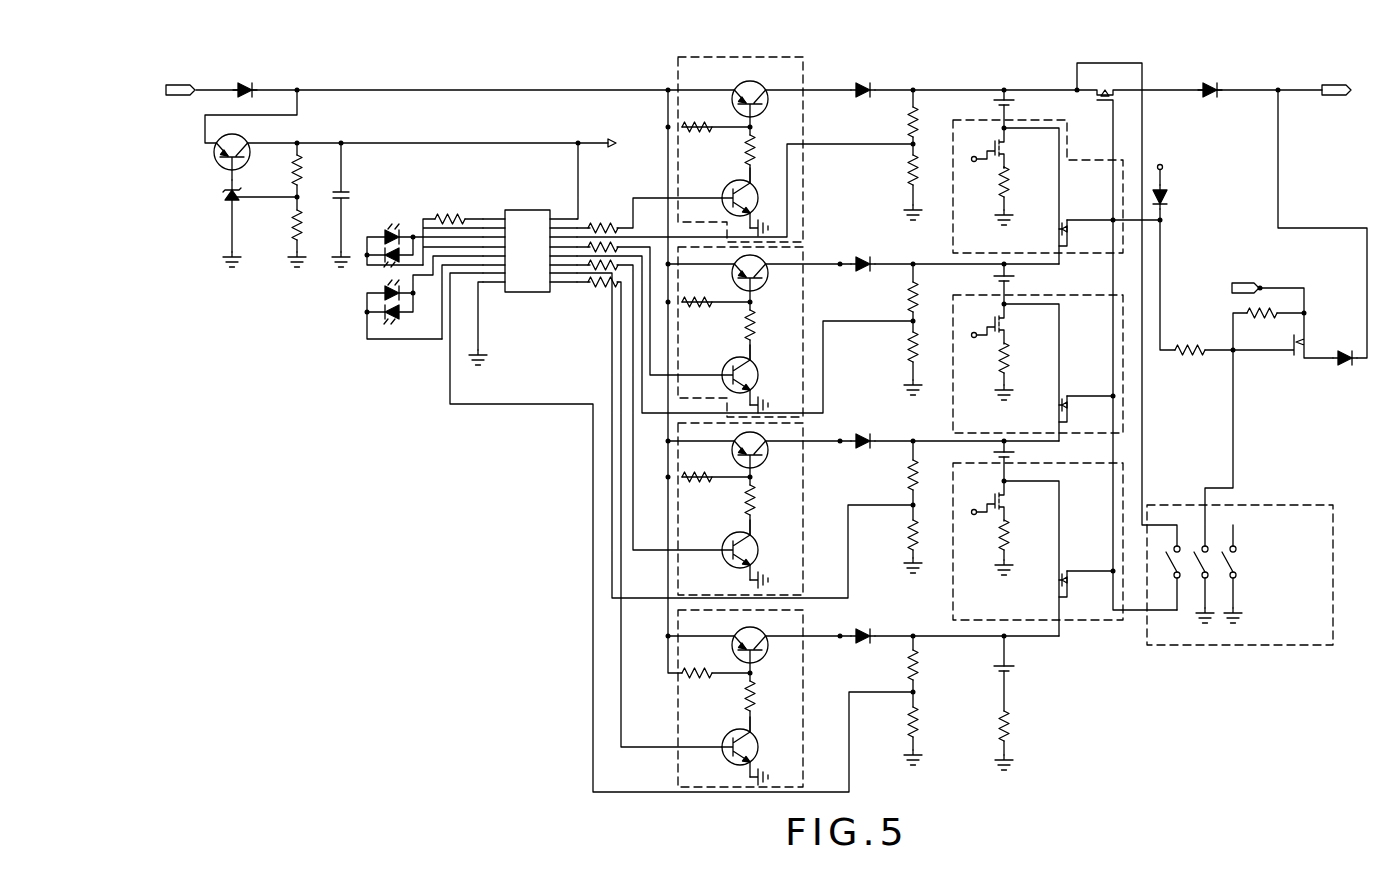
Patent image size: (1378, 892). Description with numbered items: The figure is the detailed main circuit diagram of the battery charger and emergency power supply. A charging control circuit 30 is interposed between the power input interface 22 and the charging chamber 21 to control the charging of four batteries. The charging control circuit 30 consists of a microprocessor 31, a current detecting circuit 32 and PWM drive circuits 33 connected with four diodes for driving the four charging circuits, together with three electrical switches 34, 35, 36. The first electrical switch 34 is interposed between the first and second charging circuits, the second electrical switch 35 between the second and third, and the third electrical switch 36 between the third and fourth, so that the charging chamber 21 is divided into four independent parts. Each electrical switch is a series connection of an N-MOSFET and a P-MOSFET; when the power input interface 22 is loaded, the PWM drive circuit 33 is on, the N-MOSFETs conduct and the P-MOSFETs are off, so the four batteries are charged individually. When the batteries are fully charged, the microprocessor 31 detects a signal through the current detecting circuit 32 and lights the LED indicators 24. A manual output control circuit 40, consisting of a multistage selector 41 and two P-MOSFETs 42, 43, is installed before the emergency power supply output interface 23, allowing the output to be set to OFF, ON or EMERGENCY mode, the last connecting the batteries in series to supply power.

The charging chamber 21 is at (1001, 87).
The power input interface 22 is at (183, 97).
The emergency power supply output interface 23 is at (1330, 97).
The LED indicators 24 is at (353, 320).
The charging control circuit 30 is at (1062, 48).
The microprocessor 31 is at (527, 294).
The current detecting circuit 32 is at (592, 454).
The PWM drive circuit 33 is at (790, 198).
The first electrical switch 34 is at (1048, 214).
The second electrical switch 35 is at (1050, 390).
The third electrical switch 36 is at (1050, 558).
The manual output control circuit 40 is at (1075, 48).
The multistage selector 41 is at (1292, 522).
The P-MOSFET 42 is at (1108, 84).
The P-MOSFET 43 is at (1308, 330).